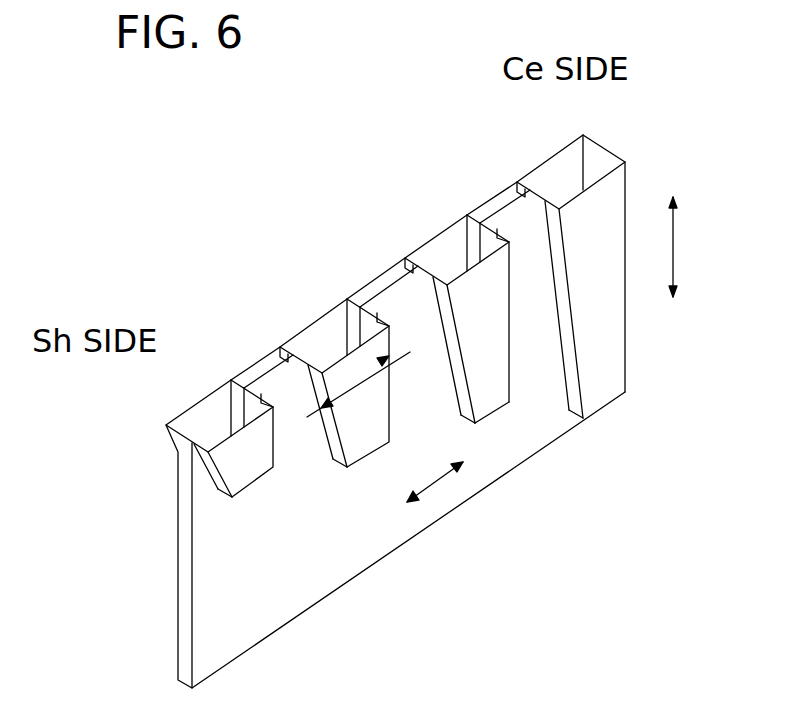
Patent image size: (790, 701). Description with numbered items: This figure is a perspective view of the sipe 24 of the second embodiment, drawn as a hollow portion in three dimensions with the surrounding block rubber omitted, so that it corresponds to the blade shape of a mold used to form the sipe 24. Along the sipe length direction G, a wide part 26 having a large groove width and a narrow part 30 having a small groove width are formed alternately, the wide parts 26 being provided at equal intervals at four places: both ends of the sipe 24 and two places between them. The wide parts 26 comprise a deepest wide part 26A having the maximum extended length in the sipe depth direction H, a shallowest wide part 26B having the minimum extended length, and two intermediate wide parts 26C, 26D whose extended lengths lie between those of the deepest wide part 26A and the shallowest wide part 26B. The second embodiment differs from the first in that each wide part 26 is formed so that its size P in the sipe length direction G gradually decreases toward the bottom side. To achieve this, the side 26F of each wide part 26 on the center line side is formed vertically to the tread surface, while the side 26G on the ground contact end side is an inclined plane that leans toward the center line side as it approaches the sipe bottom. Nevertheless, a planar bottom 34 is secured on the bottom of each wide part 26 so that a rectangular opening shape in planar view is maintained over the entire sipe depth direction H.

The sipe 24 is at (312, 167).
The wide part 26 is at (453, 283).
The deepest wide part 26A is at (548, 168).
The shallowest wide part 26B is at (197, 417).
The intermediate wide part 26C is at (437, 253).
The intermediate wide part 26D is at (318, 337).
The side at center line side 26F is at (608, 155).
The side at ground contact end side 26G is at (205, 468).
The narrow part 30 is at (267, 377).
The planar bottom 34 is at (253, 482).
The sipe depth direction H is at (687, 247).
The sipe length direction G is at (436, 485).
The size in sipe length direction P is at (380, 373).